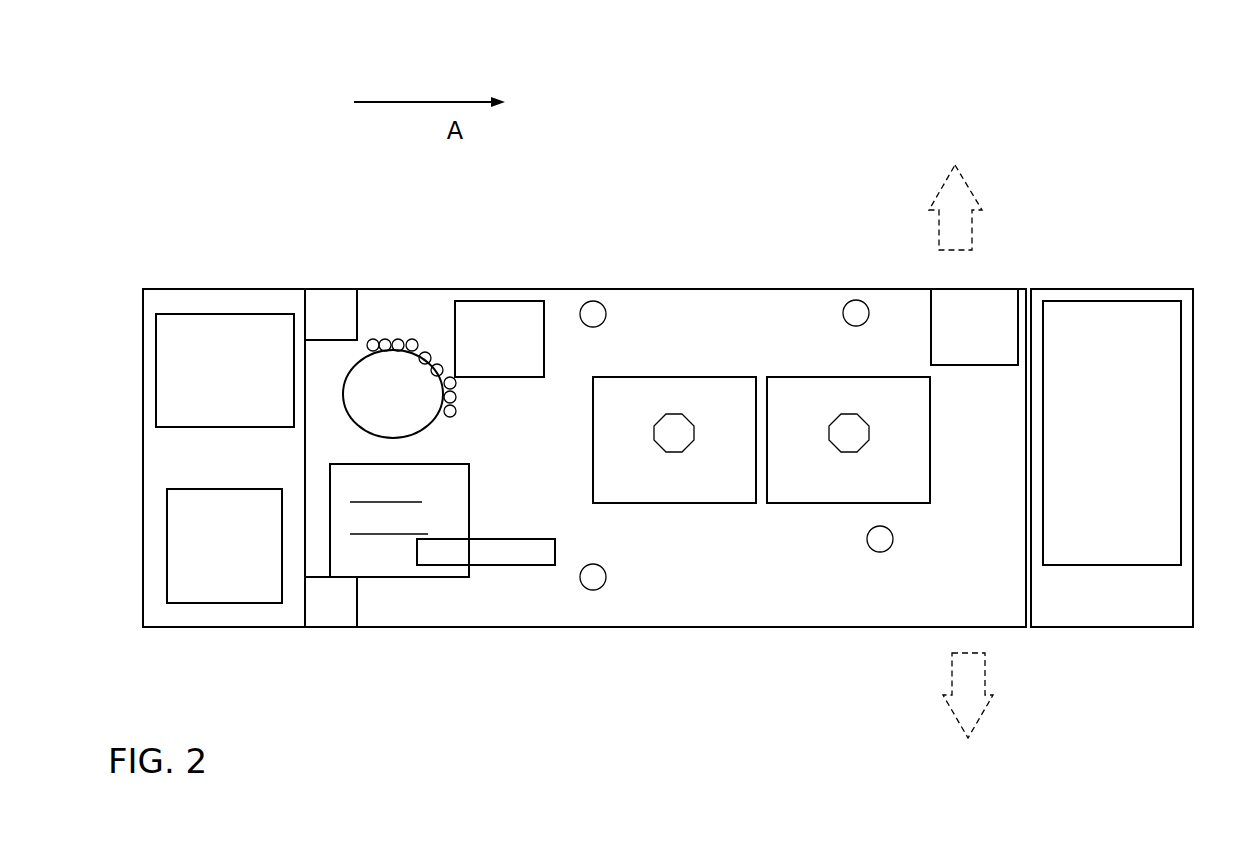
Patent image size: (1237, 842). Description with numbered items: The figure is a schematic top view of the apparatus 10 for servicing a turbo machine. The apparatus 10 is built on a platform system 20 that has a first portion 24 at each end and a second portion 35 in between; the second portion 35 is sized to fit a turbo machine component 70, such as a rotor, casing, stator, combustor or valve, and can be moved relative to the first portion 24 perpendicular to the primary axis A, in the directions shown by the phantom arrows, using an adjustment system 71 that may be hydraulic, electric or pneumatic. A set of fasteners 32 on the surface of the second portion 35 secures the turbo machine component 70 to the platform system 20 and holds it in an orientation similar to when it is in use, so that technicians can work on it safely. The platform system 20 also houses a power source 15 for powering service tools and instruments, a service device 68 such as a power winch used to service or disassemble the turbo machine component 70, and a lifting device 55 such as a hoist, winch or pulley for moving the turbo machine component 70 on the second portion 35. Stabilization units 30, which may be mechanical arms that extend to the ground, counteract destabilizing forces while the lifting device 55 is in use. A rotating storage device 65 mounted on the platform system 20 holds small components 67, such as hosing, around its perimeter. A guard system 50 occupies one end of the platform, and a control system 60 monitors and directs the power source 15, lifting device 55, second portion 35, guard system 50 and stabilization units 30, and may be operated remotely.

The apparatus 10 is at (262, 121).
The power source 15 is at (211, 593).
The platform system 20 is at (210, 465).
The first portion 24 is at (223, 627).
The stabilization unit 30 is at (311, 326).
The set of fasteners 32 is at (585, 302).
The second portion 35 is at (750, 627).
The guard system 50 is at (1101, 417).
The lifting device 55 is at (373, 566).
The control system 60 is at (210, 417).
The rotating storage device 65 is at (374, 401).
The small components 67 is at (378, 338).
The service device 68 is at (472, 338).
The turbo machine component 70 is at (849, 377).
The adjustment system 71 is at (943, 326).